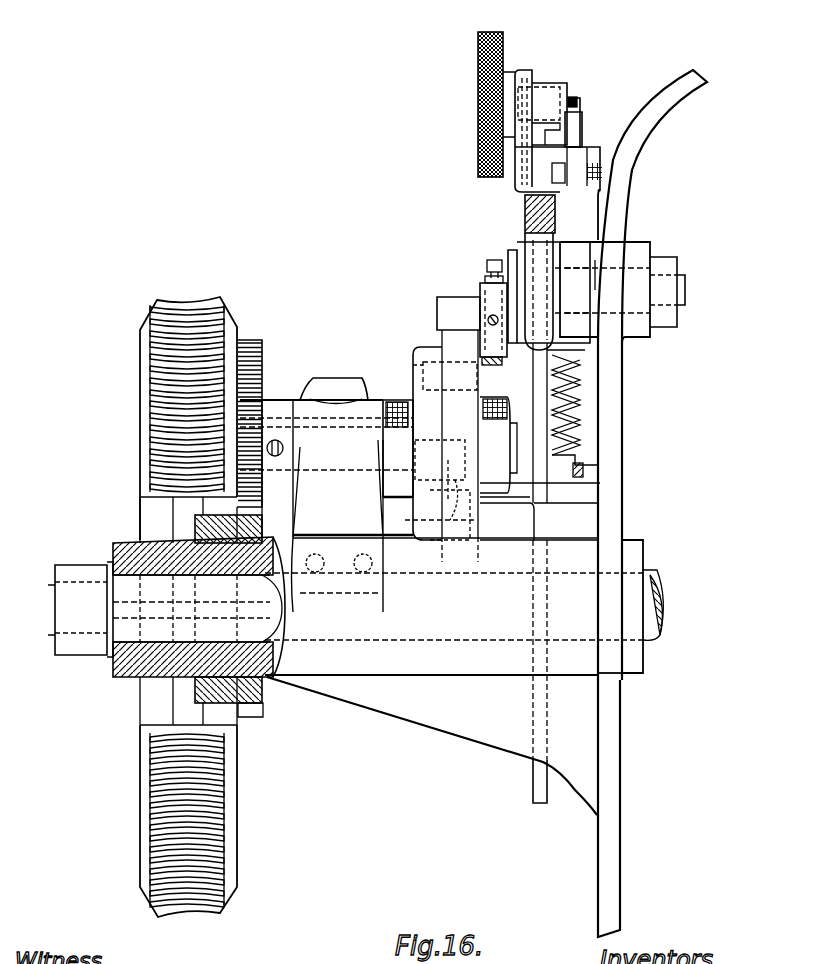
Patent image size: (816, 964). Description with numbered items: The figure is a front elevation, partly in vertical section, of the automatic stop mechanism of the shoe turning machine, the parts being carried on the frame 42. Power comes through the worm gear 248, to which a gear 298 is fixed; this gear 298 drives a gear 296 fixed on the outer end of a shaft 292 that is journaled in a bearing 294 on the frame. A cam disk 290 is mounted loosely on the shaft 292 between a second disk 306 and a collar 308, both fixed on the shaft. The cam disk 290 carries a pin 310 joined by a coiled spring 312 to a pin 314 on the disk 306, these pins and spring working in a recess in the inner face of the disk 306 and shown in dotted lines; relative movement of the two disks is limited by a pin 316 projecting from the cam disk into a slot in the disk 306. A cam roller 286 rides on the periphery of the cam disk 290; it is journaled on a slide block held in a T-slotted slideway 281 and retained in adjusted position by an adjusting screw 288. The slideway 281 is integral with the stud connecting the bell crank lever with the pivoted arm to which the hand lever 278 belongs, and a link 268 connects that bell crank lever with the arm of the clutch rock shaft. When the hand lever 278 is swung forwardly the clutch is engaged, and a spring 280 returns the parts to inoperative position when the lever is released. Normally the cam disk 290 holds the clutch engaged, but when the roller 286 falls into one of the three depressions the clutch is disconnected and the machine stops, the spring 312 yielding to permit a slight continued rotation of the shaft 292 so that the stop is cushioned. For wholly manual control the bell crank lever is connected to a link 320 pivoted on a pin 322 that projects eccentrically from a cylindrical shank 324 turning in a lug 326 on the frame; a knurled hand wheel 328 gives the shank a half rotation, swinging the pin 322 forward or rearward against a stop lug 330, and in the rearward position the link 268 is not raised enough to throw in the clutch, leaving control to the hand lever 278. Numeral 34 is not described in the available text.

The boss on frame plate 34 is at (655, 590).
The frame 42 is at (612, 449).
The worm gear 248 is at (237, 832).
The link 268 is at (540, 773).
The hand lever 278 is at (593, 213).
The spring 280 is at (578, 402).
The slideway 281 is at (440, 300).
The cam roller 286 is at (457, 300).
The adjusting screw 288 is at (492, 262).
The cam disk 290 is at (440, 355).
The shaft 292 is at (352, 465).
The bearing 294 is at (298, 395).
The gear 296 is at (250, 345).
The gear 298 is at (255, 710).
The second disk 306 is at (413, 365).
The collar 308 is at (600, 485).
The pin 310 is at (530, 515).
The coiled spring 312 is at (405, 521).
The pin 314 is at (445, 450).
The pin 316 is at (405, 402).
The link 320 is at (573, 98).
The pin 322 is at (576, 100).
The cylindrical shank 324 is at (540, 83).
The lug 326 is at (520, 70).
The knurled hand wheel 328 is at (478, 58).
The stop lug 330 is at (575, 122).